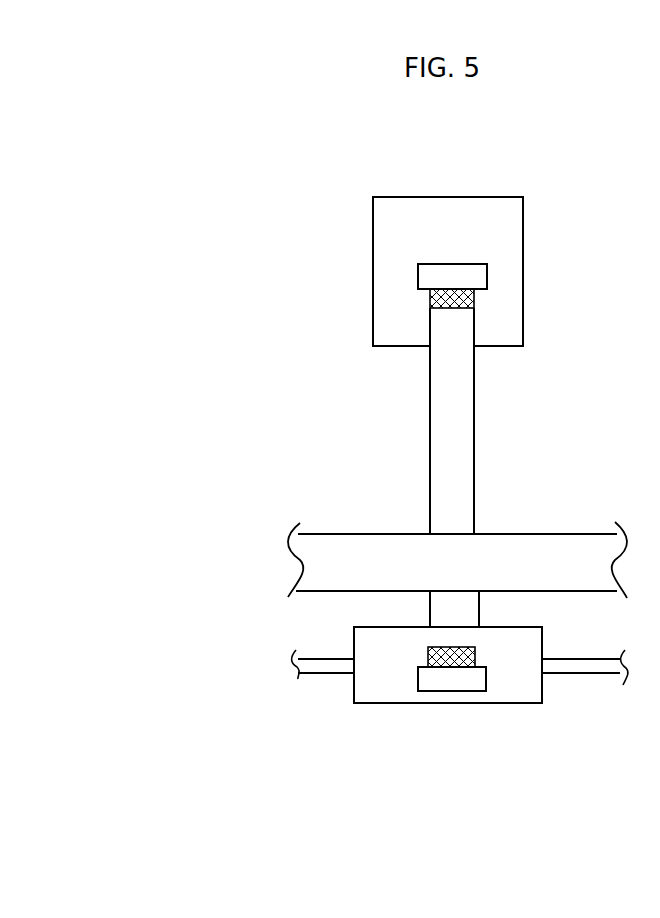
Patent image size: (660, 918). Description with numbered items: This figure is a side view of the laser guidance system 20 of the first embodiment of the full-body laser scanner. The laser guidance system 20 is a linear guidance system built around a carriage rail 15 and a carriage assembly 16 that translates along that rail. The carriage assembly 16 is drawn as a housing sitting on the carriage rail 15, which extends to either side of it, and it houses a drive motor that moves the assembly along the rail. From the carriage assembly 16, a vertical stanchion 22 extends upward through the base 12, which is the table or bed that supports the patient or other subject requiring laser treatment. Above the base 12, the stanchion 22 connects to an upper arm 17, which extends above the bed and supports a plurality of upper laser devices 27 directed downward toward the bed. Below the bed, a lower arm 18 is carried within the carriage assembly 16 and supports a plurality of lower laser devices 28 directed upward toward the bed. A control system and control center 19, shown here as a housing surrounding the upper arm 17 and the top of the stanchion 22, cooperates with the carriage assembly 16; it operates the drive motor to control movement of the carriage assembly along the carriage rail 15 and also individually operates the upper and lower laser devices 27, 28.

The laser guidance system 20 is at (346, 180).
The control system and control center 19 is at (507, 247).
The upper arm 17 is at (438, 270).
The upper laser devices 27 is at (458, 300).
The vertical stanchion 22 is at (452, 412).
The base 12 is at (525, 565).
The carriage assembly 16 is at (393, 675).
The lower arm 18 is at (457, 680).
The lower laser devices 28 is at (473, 655).
The carriage rail 15 is at (576, 669).